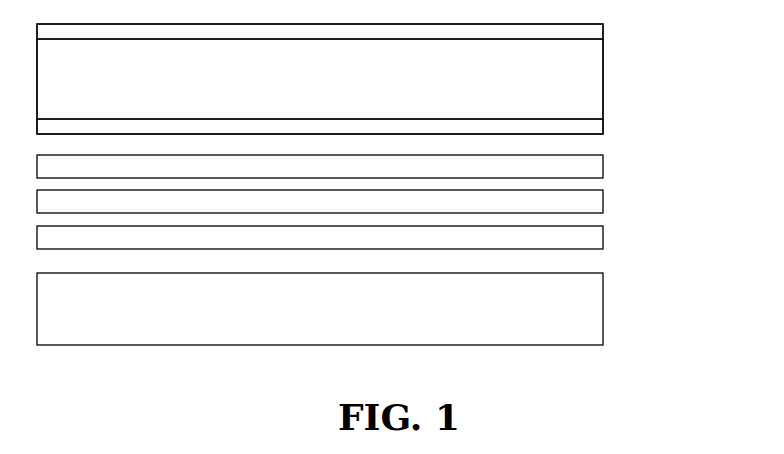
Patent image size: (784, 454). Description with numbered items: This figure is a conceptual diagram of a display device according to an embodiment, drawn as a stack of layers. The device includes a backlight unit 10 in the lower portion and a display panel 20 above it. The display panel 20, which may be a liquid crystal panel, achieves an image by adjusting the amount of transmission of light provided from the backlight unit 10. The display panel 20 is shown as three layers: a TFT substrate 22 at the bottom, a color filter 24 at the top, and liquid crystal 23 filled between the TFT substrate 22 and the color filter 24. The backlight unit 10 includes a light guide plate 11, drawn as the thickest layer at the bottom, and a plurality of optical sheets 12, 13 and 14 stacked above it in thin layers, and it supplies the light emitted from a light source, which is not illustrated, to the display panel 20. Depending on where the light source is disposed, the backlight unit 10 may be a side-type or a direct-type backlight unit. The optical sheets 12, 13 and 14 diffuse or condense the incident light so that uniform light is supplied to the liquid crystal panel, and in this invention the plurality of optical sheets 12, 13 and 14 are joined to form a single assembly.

The backlight unit 10 is at (693, 308).
The light guide plate 11 is at (603, 304).
The optical sheet 12 is at (603, 237).
The optical sheet 13 is at (603, 200).
The optical sheet 14 is at (603, 164).
The display panel 20 is at (693, 32).
The TFT substrate 22 is at (603, 127).
The liquid crystal 23 is at (603, 80).
The color filter 24 is at (603, 34).